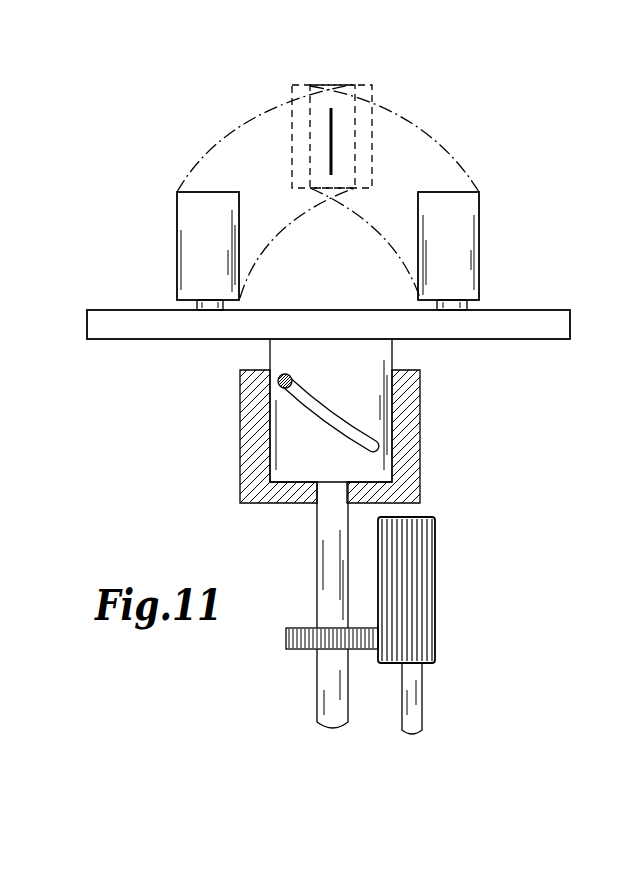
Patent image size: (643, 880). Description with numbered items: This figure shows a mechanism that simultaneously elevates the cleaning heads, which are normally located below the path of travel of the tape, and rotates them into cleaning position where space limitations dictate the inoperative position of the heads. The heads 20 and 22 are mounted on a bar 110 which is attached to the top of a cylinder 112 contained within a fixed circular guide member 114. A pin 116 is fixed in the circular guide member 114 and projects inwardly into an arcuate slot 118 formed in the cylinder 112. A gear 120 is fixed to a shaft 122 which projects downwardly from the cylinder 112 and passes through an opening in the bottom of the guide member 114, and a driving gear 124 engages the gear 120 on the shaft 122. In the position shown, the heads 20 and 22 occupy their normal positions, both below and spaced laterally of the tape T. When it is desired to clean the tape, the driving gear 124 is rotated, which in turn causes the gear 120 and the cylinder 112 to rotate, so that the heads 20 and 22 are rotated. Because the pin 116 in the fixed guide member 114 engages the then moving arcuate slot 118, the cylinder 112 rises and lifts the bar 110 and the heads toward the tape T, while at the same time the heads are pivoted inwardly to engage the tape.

The cleaning head 20 is at (182, 220).
The cleaning head 22 is at (478, 228).
The tape T is at (331, 145).
The bar 110 is at (140, 316).
The cylinder 112 is at (376, 357).
The fixed circular guide member 114 is at (413, 427).
The pin 116 is at (280, 374).
The arcuate slot 118 is at (306, 406).
The gear 120 is at (303, 635).
The shaft 122 is at (322, 532).
The driving gear 124 is at (425, 600).